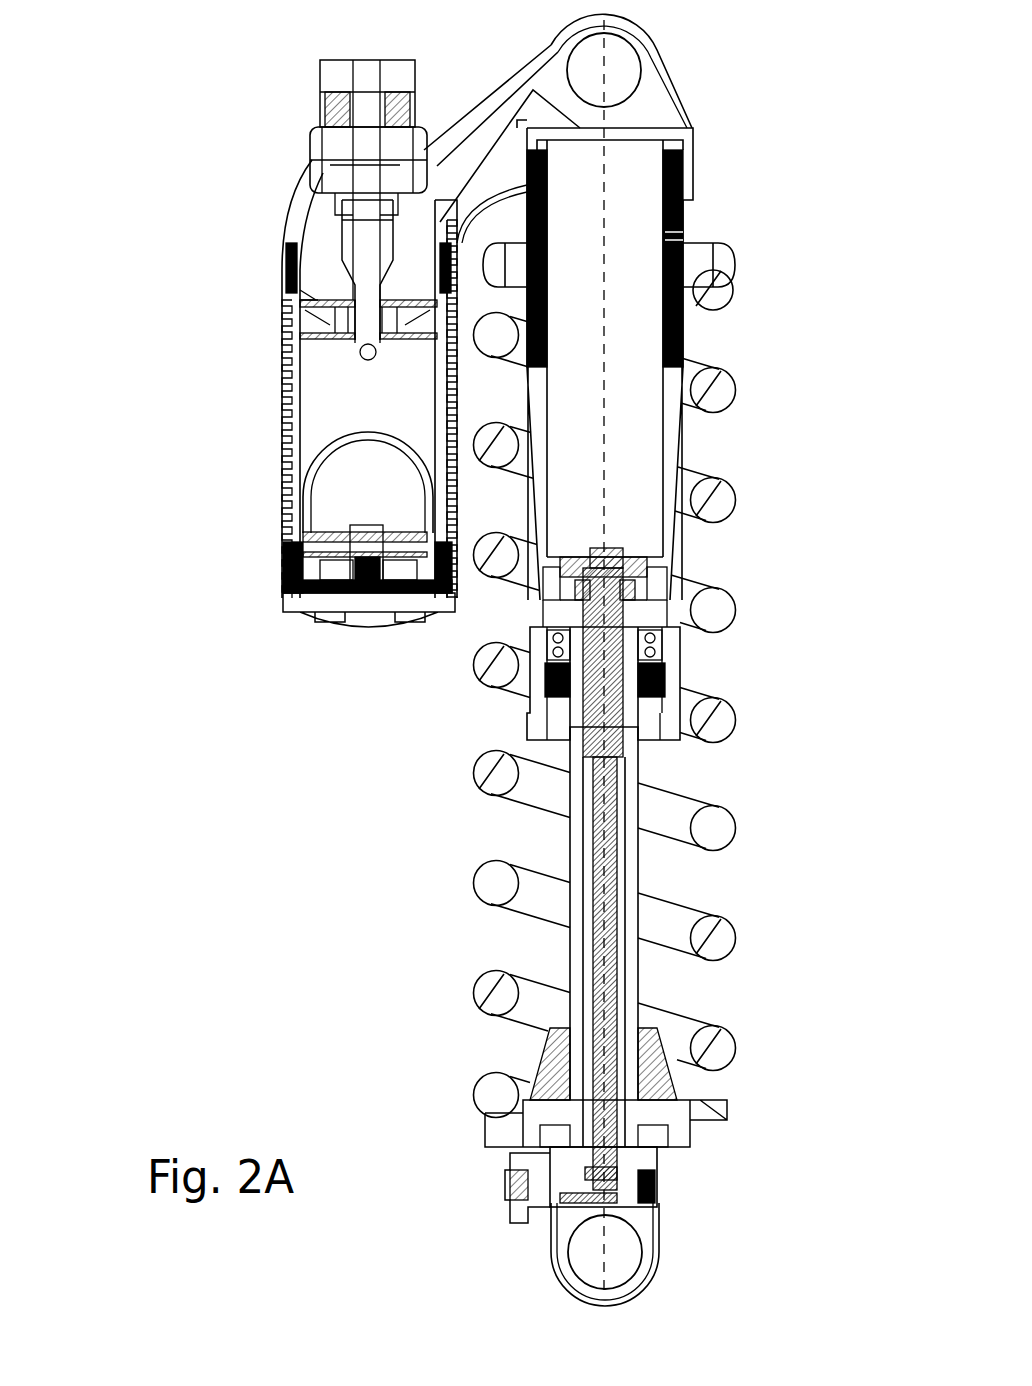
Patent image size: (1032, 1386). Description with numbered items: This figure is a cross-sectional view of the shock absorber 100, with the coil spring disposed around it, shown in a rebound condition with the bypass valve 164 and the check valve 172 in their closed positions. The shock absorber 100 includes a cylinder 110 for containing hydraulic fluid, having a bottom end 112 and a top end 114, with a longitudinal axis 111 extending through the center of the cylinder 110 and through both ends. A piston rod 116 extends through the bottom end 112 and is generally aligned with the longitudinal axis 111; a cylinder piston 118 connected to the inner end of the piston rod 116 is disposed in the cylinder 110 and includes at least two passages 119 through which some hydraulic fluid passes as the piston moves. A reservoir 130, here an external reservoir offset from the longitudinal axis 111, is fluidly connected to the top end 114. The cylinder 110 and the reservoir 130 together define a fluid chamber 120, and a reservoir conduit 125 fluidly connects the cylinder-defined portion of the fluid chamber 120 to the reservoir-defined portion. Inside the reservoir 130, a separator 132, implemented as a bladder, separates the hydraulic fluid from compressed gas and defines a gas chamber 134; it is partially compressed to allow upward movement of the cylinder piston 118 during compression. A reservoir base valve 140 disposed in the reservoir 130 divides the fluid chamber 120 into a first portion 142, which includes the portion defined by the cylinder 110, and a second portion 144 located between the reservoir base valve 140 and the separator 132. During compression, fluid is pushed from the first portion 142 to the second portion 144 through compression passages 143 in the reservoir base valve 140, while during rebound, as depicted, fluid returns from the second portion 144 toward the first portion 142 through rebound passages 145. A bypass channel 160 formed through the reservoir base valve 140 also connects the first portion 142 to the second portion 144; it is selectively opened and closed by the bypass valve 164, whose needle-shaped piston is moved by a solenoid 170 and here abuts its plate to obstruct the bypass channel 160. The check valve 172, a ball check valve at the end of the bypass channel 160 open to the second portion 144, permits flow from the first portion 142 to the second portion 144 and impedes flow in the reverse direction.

The shock absorber 100 is at (340, 940).
The cylinder 110 is at (684, 430).
The longitudinal axis 111 is at (617, 62).
The bottom end 112 is at (528, 720).
The top end 114 is at (702, 150).
The piston rod 116 is at (628, 798).
The cylinder piston 118 is at (660, 560).
The passages 119 is at (660, 612).
The fluid chamber 120 is at (627, 350).
The reservoir conduit 125 is at (480, 155).
The reservoir 130 is at (247, 604).
The separator 132 is at (345, 440).
The gas chamber 134 is at (323, 513).
The reservoir base valve 140 is at (303, 322).
The first portion 142 is at (318, 254).
The compression passages 143 is at (292, 300).
The second portion 144 is at (320, 422).
The rebound passages 145 is at (426, 335).
The bypass channel 160 is at (337, 223).
The bypass valve 164 is at (312, 163).
The solenoid 170 is at (338, 79).
The check valve 172 is at (343, 354).